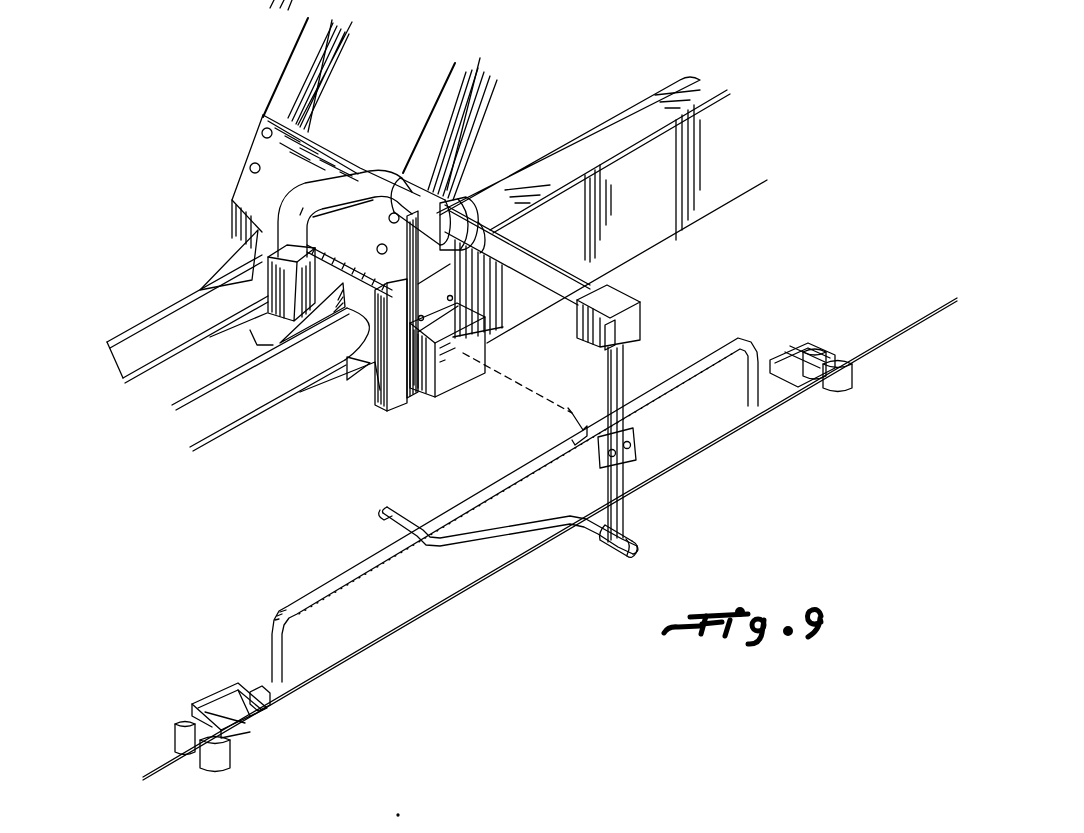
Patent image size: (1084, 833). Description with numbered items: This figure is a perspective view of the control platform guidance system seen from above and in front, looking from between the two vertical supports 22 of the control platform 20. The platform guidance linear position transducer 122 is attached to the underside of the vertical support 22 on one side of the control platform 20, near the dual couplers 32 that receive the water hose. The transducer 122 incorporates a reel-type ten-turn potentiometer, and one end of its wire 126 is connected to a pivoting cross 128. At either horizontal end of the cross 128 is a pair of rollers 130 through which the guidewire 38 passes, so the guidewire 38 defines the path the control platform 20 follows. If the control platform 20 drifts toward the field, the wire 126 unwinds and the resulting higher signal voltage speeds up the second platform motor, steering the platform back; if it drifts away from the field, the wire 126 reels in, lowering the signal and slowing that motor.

The control platform 20 is at (603, 135).
The vertical support 22 is at (273, 97).
The dual couplers 32 is at (148, 332).
The guidewire 38 is at (890, 347).
The platform guidance linear position transducer 122 is at (425, 397).
The wire 126 is at (530, 400).
The pivoting cross 128 is at (303, 593).
The rollers 130 is at (195, 742).